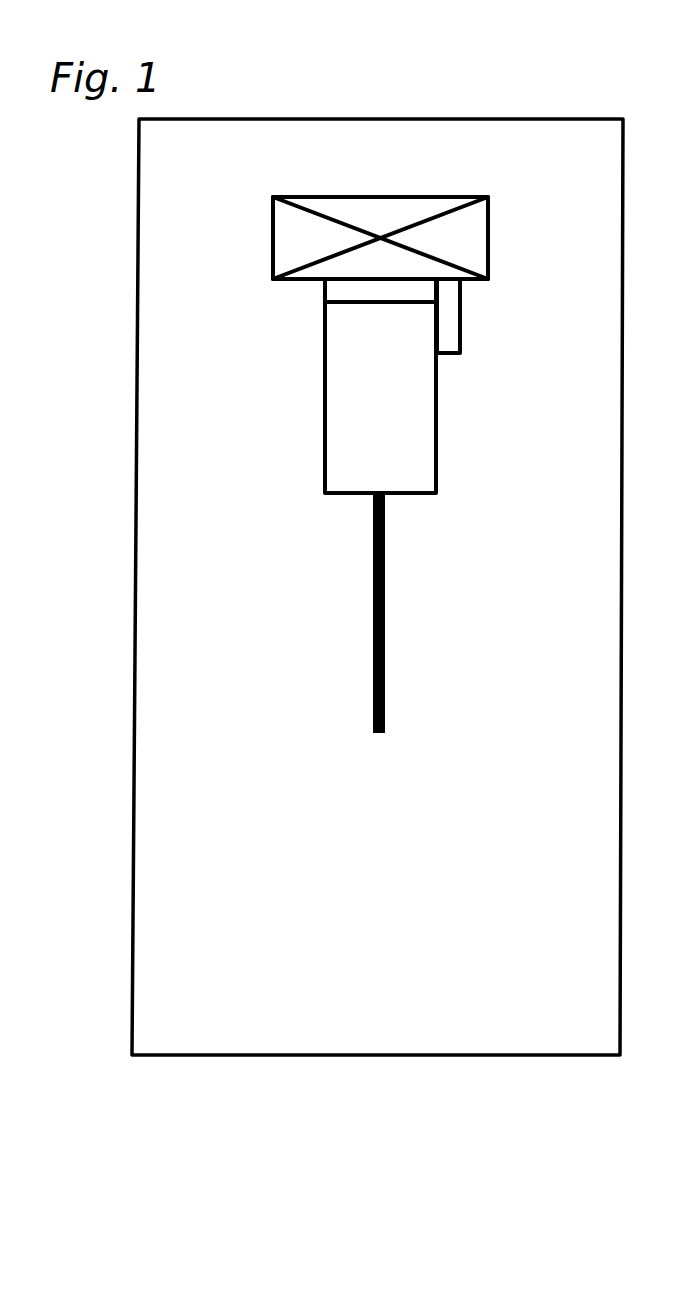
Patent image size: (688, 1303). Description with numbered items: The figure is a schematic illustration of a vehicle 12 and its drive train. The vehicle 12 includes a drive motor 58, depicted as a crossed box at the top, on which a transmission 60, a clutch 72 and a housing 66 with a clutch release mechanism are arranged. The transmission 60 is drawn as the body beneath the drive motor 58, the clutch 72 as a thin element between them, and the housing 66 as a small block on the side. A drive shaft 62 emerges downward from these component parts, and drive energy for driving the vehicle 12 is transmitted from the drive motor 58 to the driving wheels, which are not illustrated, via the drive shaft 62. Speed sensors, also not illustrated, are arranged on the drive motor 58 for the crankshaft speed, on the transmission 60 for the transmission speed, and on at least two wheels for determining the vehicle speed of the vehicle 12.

The vehicle 12 is at (160, 1145).
The drive motor 58 is at (272, 238).
The transmission 60 is at (325, 357).
The drive shaft 62 is at (373, 617).
The housing 66 is at (460, 322).
The clutch 72 is at (325, 293).